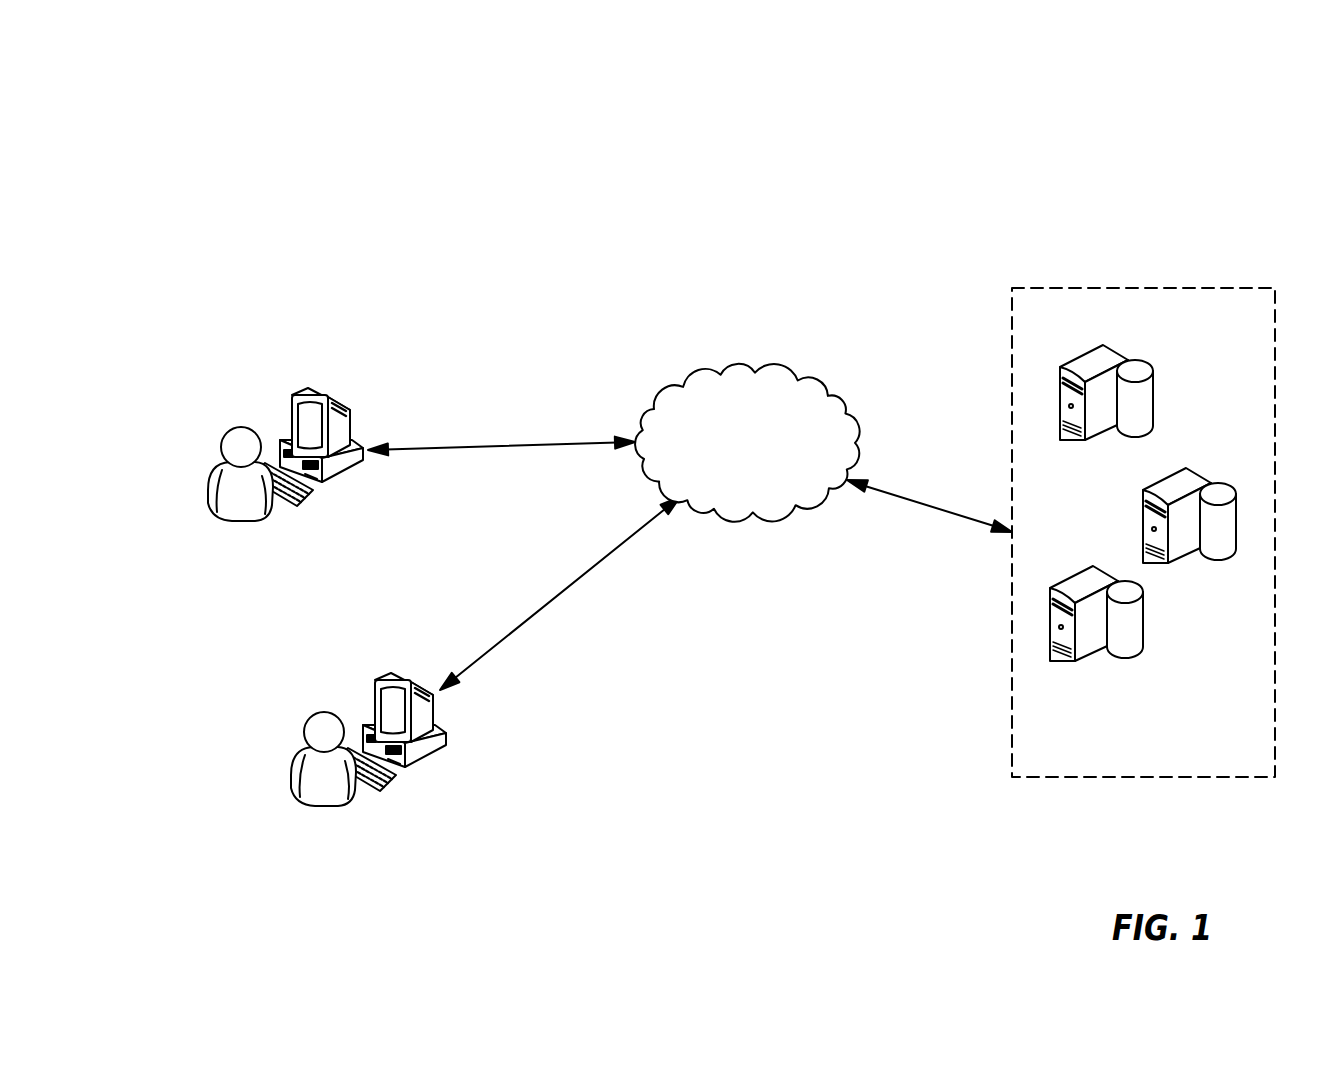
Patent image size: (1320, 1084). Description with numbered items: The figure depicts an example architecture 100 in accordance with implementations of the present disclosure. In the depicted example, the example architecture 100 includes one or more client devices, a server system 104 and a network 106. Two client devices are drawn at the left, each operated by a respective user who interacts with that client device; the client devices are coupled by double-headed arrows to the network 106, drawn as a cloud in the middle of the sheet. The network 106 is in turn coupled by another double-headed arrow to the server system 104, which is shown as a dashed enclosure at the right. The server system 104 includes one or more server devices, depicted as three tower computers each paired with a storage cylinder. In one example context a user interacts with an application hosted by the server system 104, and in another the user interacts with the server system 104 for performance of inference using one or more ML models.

The architecture 100 is at (593, 114).
The server system 104 is at (1143, 288).
The network 106 is at (749, 367).